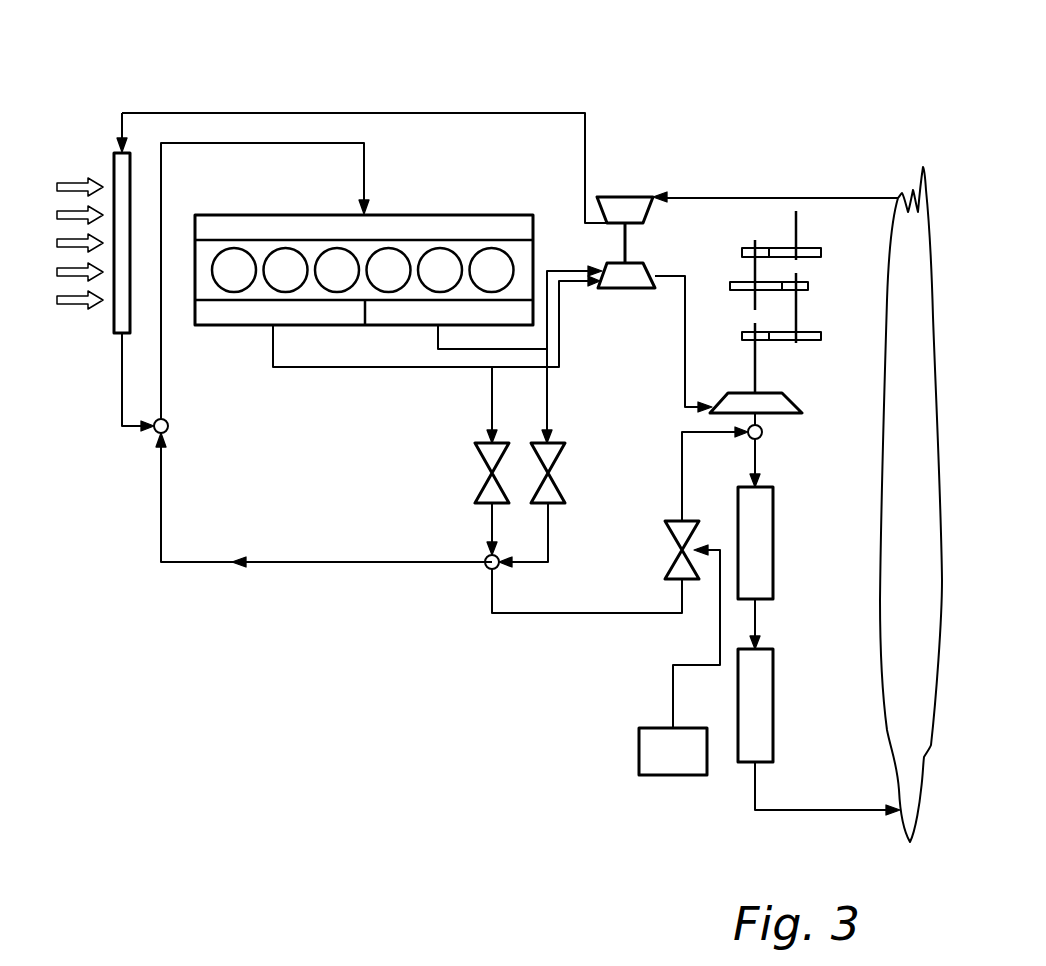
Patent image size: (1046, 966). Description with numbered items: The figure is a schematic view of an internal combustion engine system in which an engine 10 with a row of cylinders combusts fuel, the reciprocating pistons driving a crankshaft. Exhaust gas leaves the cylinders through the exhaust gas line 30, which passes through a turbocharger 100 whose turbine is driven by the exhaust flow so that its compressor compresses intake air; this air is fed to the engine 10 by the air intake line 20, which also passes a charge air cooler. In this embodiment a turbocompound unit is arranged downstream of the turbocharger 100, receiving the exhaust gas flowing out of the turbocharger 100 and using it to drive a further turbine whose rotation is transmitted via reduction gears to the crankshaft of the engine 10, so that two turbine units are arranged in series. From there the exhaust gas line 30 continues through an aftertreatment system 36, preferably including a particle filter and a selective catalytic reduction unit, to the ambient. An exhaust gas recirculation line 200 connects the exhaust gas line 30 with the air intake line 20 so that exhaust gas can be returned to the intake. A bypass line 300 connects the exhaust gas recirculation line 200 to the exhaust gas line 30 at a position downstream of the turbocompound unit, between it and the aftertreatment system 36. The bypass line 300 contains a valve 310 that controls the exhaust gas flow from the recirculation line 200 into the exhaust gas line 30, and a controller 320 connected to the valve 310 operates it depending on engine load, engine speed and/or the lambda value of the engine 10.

The air intake line 20 is at (300, 113).
The internal combustion engine 10 is at (493, 215).
The turbocharger 100 is at (662, 158).
The exhaust gas line 30 is at (672, 273).
The exhaust gas recirculation line 200 is at (316, 613).
The bypass line 300 is at (636, 613).
The valve 310 is at (664, 577).
The controller 320 is at (638, 743).
The aftertreatment system 36 is at (824, 624).